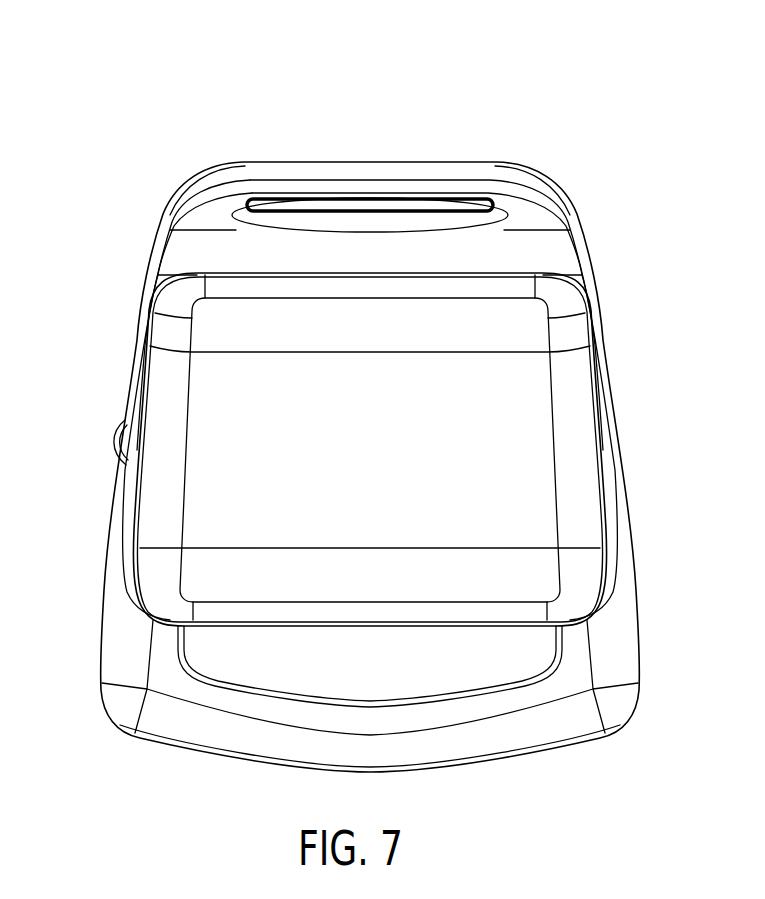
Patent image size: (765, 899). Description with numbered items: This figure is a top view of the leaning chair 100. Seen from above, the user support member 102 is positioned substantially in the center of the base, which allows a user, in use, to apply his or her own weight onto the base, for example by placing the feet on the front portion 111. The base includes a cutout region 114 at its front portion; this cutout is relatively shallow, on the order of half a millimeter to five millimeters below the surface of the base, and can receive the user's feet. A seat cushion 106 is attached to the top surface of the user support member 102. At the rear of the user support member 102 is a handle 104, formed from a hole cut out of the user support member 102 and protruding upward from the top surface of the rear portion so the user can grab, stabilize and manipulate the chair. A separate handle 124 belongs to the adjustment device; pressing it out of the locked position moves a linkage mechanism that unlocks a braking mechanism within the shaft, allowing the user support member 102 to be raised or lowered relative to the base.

The leaning chair 100 is at (124, 95).
The user support member 102 is at (618, 513).
The handle 104 is at (383, 125).
The seat cushion 106 is at (400, 460).
The front portion 111 is at (475, 735).
The cutout region 114 is at (303, 690).
The handle 124 is at (115, 442).